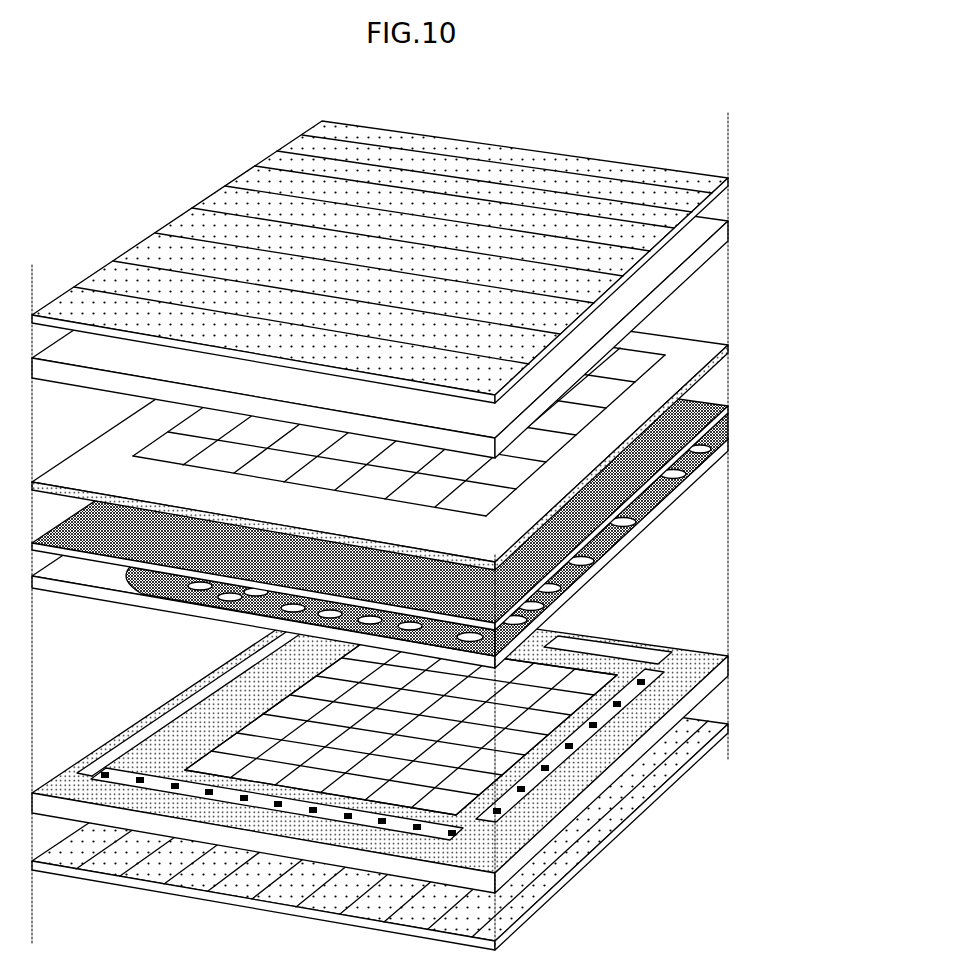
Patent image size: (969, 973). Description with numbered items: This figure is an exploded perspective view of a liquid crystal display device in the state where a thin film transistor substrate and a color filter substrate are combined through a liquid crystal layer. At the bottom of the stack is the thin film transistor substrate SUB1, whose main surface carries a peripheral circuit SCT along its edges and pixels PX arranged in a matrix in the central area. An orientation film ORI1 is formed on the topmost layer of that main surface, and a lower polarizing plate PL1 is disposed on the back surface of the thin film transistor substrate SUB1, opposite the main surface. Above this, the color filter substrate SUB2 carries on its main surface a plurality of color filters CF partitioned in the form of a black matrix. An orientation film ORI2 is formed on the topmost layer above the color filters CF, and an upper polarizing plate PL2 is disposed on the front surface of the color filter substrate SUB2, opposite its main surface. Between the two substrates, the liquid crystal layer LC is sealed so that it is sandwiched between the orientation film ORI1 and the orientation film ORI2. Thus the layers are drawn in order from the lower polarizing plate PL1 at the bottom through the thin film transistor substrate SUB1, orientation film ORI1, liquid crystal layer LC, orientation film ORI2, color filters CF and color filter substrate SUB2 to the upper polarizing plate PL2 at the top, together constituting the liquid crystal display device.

The lower polarizing plate PL1 is at (535, 905).
The thin film transistor substrate SUB1 is at (522, 853).
The pixels PX is at (537, 750).
The peripheral circuit SCT is at (555, 775).
The orientation film ORI1 is at (708, 462).
The liquid crystal layer LC is at (675, 490).
The orientation film ORI2 is at (720, 415).
The color filters CF is at (675, 343).
The color filter substrate SUB2 is at (670, 278).
The upper polarizing plate PL2 is at (670, 238).